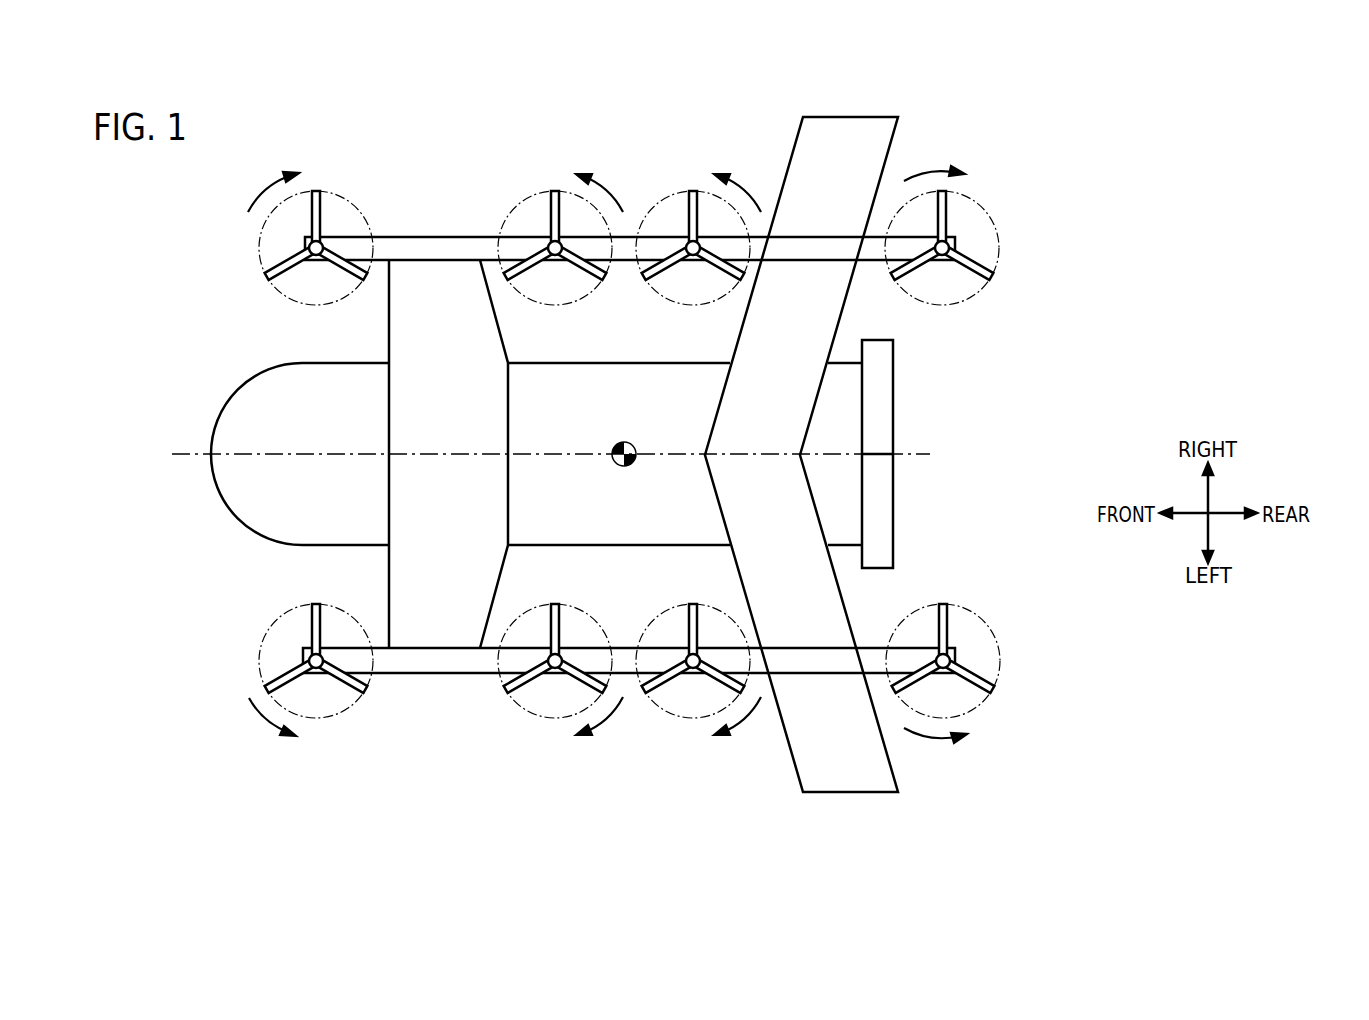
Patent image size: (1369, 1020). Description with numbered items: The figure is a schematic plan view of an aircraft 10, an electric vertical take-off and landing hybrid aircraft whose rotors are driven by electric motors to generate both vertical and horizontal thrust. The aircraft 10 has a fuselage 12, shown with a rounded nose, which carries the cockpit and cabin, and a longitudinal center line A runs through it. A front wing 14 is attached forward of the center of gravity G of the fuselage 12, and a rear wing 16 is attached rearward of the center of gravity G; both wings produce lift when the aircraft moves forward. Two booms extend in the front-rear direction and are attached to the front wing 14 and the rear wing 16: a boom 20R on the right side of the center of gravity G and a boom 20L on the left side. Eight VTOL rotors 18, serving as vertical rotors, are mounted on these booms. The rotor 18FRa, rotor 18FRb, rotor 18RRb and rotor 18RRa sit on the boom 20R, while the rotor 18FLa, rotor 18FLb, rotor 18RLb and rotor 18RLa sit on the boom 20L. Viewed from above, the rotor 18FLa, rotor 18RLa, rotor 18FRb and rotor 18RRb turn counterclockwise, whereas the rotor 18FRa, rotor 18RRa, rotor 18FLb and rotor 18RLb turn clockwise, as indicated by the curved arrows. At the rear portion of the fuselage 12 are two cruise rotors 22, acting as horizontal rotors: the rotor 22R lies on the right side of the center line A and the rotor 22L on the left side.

The aircraft 10 is at (134, 210).
The fuselage 12 is at (214, 424).
The front wing 14 is at (423, 282).
The rear wing 16 is at (843, 117).
The VTOL rotor 18 is at (690, 457).
The rotor 18FRa is at (318, 192).
The rotor 18FRb is at (557, 191).
The rotor 18RRb is at (692, 191).
The rotor 18RRa is at (950, 203).
The rotor 18FLa is at (342, 685).
The rotor 18FLb is at (513, 679).
The rotor 18RLb is at (663, 684).
The rotor 18RLa is at (973, 684).
The boom 20R is at (803, 235).
The boom 20L is at (801, 673).
The cruise rotor 22 is at (942, 454).
The rotor 22R is at (893, 402).
The rotor 22L is at (893, 505).
The center line A is at (539, 457).
The center of gravity G is at (615, 466).